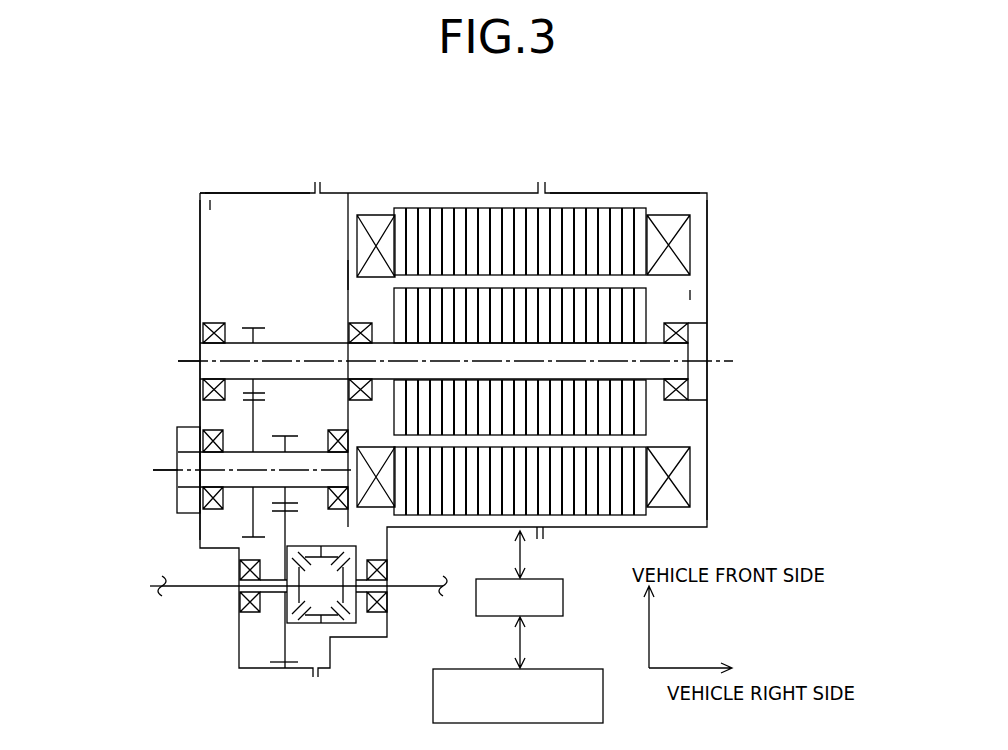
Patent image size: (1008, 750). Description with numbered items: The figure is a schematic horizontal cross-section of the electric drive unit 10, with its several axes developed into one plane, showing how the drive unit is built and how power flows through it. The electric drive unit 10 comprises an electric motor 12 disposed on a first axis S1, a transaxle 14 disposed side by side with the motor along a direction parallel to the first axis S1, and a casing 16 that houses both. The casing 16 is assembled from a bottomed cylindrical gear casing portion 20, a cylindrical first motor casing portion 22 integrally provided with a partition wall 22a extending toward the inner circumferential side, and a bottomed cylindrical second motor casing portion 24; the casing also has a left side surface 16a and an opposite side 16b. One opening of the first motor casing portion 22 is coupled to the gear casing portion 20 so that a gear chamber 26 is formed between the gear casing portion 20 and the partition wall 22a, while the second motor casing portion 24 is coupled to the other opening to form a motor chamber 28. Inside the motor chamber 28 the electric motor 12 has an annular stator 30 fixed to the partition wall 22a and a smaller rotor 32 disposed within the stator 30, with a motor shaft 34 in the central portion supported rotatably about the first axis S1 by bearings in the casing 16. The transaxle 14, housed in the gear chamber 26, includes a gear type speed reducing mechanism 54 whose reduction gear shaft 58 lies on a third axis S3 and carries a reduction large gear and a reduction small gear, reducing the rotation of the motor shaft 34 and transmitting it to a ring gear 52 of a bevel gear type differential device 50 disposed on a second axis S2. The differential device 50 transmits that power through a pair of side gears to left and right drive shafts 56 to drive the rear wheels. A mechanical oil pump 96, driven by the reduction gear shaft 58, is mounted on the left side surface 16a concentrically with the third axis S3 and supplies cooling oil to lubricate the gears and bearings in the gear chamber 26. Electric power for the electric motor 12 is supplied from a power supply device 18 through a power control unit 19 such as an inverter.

The electric drive unit 10 is at (571, 121).
The electric motor 12 is at (455, 359).
The transaxle 14 is at (287, 487).
The casing 16 is at (606, 158).
The left side surface 16a is at (200, 218).
The case right wall 16b is at (708, 273).
The power supply device 18 is at (493, 669).
The power control unit 19 is at (545, 607).
The gear casing portion 20 is at (263, 192).
The first motor casing portion 22 is at (382, 192).
The partition wall 22a is at (347, 275).
The second motor casing portion 24 is at (647, 193).
The gear chamber 26 is at (224, 235).
The motor chamber 28 is at (661, 307).
The stator 30 is at (557, 217).
The rotor 32 is at (593, 423).
The motor shaft 34 is at (383, 348).
The differential device 50 is at (336, 640).
The ring gear 52 is at (282, 668).
The gear type speed reducing mechanism 54 is at (228, 418).
The drive shafts 56 is at (193, 588).
The reduction gear shaft 58 is at (237, 480).
The mechanical oil pump 96 is at (187, 442).
The first axis S1 is at (173, 361).
The second axis S2 is at (144, 584).
The third axis S3 is at (152, 471).